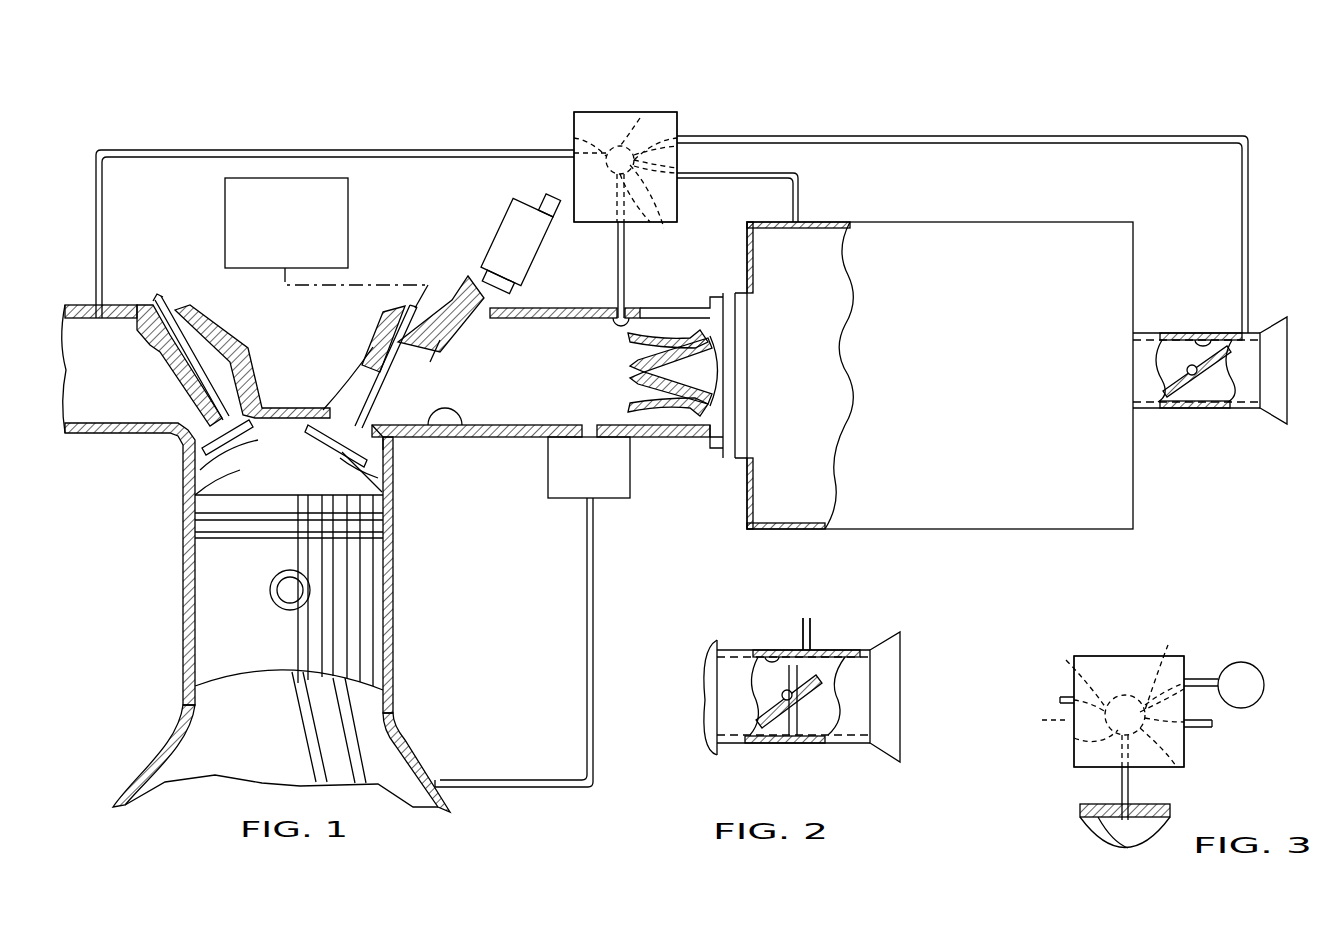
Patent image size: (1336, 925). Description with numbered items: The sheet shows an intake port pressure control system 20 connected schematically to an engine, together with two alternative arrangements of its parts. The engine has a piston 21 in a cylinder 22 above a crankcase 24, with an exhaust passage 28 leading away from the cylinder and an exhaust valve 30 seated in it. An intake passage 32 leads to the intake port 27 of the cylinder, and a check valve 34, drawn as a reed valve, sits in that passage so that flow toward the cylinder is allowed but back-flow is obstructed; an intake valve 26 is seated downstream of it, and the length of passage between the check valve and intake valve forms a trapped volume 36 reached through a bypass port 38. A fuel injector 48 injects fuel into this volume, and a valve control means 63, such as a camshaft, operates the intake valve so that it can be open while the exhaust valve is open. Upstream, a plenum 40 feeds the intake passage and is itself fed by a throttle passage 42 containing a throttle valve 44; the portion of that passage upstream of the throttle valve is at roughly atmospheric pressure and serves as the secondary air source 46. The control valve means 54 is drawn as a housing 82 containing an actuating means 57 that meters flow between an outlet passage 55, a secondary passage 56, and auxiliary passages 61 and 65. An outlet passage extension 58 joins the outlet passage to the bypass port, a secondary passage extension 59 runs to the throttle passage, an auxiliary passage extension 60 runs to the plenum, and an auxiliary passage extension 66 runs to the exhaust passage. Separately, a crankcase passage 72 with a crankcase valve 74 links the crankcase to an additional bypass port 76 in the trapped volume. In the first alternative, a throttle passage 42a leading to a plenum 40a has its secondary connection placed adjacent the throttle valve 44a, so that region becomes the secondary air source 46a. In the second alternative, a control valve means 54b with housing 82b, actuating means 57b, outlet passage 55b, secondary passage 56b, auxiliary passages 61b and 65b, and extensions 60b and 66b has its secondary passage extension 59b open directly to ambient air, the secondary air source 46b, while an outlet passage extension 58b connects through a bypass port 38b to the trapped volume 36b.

In FIG. 1, the intake port pressure control system 20 is at (393, 140).
In FIG. 1, the piston 21 is at (232, 594).
In FIG. 1, the cylinder 22 is at (192, 495).
In FIG. 1, the crankcase 24 is at (405, 785).
In FIG. 1, the intake valve 26 is at (378, 488).
In FIG. 1, the intake port 27 is at (348, 393).
In FIG. 1, the exhaust passage 28 is at (120, 345).
In FIG. 1, the exhaust valve 30 is at (180, 478).
In FIG. 1, the intake passage 32 is at (465, 440).
In FIG. 1, the check valve 34 is at (680, 372).
In FIG. 1, the trapped volume 36 is at (575, 350).
In FIG. 1, the bypass port 38 is at (634, 318).
In FIG. 1, the plenum 40 is at (935, 222).
In FIG. 1, the throttle passage 42 is at (1188, 335).
In FIG. 1, the throttle valve 44 is at (1206, 410).
In FIG. 1, the secondary air source 46 is at (1272, 412).
In FIG. 1, the fuel injector 48 is at (490, 262).
In FIG. 1, the control valve means 54 is at (690, 128).
In FIG. 1, the outlet passage 55 is at (634, 222).
In FIG. 1, the secondary passage 56 is at (640, 118).
In FIG. 1, the actuating means 57 is at (677, 150).
In FIG. 1, the outlet passage extension 58 is at (612, 294).
In FIG. 1, the secondary passage extension 59 is at (955, 136).
In FIG. 2, the secondary passage extension 59 is at (812, 648).
In FIG. 1, the auxiliary passage extension 60 is at (700, 178).
In FIG. 1, the auxiliary passage 61 is at (664, 228).
In FIG. 1, the valve control means 63 is at (348, 226).
In FIG. 1, the auxiliary passage 65 is at (574, 134).
In FIG. 1, the auxiliary passage extension 66 is at (312, 150).
In FIG. 1, the crankcase passage 72 is at (594, 760).
In FIG. 1, the crankcase valve 74 is at (615, 500).
In FIG. 1, the bypass port 76 is at (595, 425).
In FIG. 1, the housing 82 is at (605, 112).
In FIG. 2, the plenum 40a is at (705, 695).
In FIG. 2, the throttle passage 42a is at (782, 650).
In FIG. 2, the throttle valve 44a is at (806, 743).
In FIG. 2, the secondary air source 46a is at (903, 728).
In FIG. 3, the housing 82b is at (1082, 656).
In FIG. 3, the control valve means 54b is at (1145, 650).
In FIG. 3, the actuating means 57b is at (1066, 660).
In FIG. 3, the secondary passage 56b is at (1168, 645).
In FIG. 3, the secondary passage extension 59b is at (1193, 678).
In FIG. 3, the secondary air source 46b is at (1264, 686).
In FIG. 3, the auxiliary passage extension 66b is at (1066, 695).
In FIG. 3, the auxiliary passage 65b is at (1042, 720).
In FIG. 3, the outlet passage 55b is at (1074, 738).
In FIG. 3, the auxiliary passage 61b is at (1176, 766).
In FIG. 3, the auxiliary passage extension 60b is at (1200, 730).
In FIG. 3, the outlet passage extension 58b is at (1135, 790).
In FIG. 3, the trapped volume 36b is at (1082, 806).
In FIG. 3, the bypass port 38b is at (1122, 830).